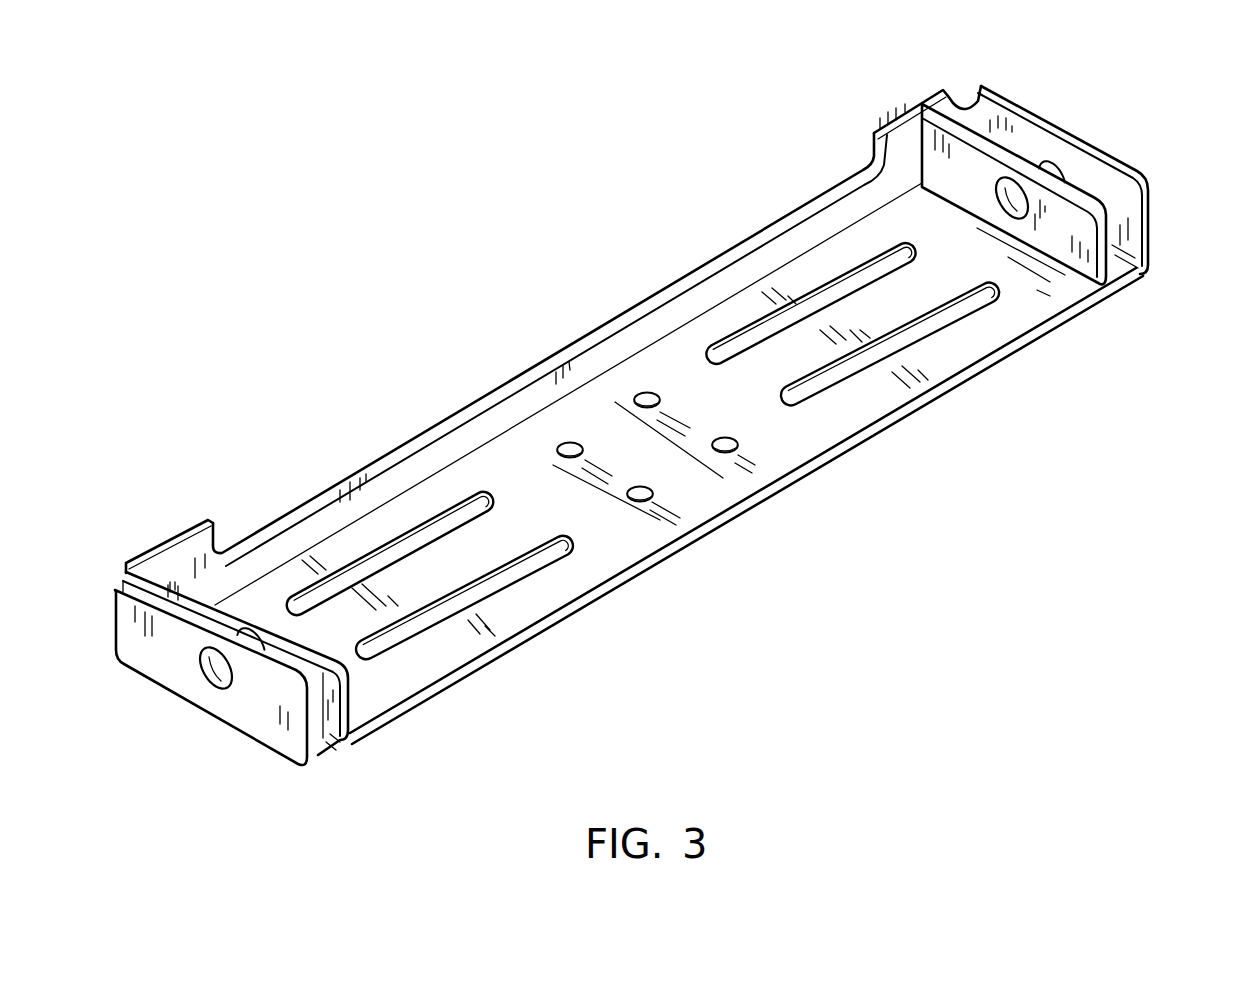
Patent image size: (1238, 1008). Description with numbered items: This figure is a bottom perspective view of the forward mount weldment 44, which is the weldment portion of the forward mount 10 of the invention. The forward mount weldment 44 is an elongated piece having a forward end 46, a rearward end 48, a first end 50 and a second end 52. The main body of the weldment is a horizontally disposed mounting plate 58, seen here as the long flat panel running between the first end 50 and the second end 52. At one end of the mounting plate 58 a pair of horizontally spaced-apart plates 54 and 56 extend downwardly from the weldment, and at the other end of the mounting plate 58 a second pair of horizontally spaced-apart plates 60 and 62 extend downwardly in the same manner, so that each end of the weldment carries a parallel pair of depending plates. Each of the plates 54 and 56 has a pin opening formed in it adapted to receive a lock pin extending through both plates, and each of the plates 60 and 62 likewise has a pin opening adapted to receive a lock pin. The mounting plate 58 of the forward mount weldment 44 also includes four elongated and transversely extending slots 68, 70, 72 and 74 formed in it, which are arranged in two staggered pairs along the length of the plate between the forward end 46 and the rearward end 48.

The forward mount 10 is at (487, 306).
The forward mount weldment 44 is at (738, 226).
The forward end 46 is at (730, 515).
The rearward end 48 is at (560, 345).
The first end 50 is at (1100, 132).
The second end 52 is at (184, 708).
The plate 54 is at (1128, 205).
The plate 56 is at (1056, 228).
The mounting plate 58 is at (640, 463).
The plate 60 is at (263, 710).
The plate 62 is at (345, 693).
The slot 68 is at (750, 343).
The slot 70 is at (858, 367).
The slot 72 is at (458, 508).
The slot 74 is at (548, 565).